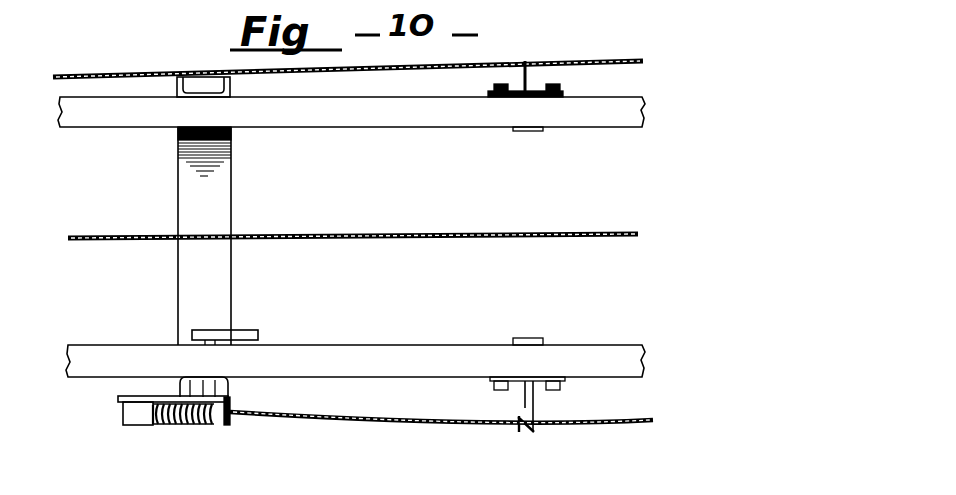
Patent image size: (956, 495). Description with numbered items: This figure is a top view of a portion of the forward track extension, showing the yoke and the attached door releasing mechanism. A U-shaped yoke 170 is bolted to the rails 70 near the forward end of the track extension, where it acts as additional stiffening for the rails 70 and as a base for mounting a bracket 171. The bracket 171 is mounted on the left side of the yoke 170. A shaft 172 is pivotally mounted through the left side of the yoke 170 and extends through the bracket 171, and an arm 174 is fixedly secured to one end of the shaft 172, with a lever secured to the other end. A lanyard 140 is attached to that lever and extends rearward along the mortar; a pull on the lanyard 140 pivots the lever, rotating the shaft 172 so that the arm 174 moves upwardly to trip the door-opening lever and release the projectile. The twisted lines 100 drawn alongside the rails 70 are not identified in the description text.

The rails 70 is at (328, 128).
The cable 100 is at (590, 59).
The lanyard 140 is at (448, 428).
The yoke 170 is at (232, 201).
The bracket 171 is at (118, 399).
The shaft 172 is at (230, 399).
The arm 174 is at (259, 332).